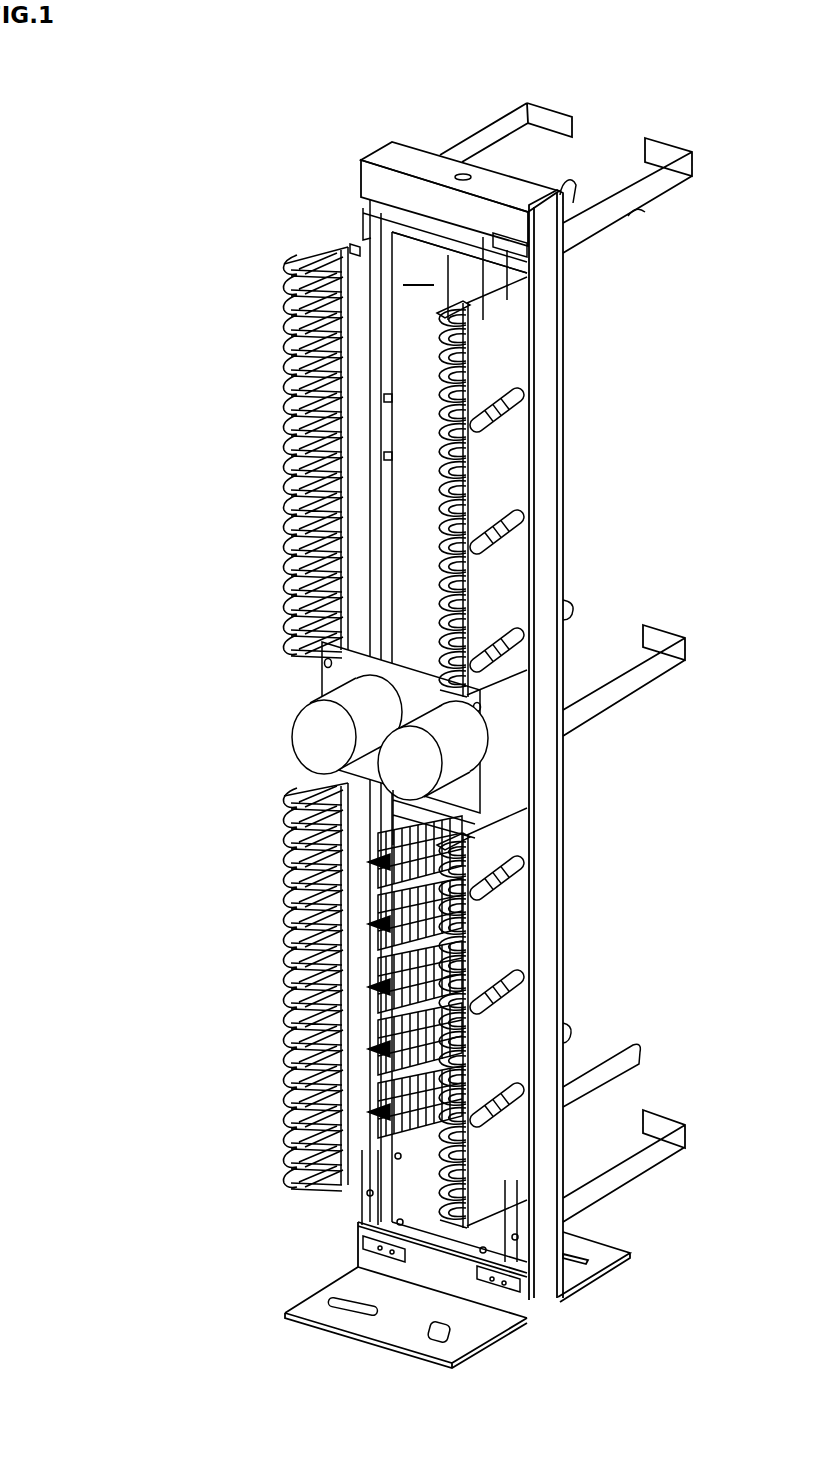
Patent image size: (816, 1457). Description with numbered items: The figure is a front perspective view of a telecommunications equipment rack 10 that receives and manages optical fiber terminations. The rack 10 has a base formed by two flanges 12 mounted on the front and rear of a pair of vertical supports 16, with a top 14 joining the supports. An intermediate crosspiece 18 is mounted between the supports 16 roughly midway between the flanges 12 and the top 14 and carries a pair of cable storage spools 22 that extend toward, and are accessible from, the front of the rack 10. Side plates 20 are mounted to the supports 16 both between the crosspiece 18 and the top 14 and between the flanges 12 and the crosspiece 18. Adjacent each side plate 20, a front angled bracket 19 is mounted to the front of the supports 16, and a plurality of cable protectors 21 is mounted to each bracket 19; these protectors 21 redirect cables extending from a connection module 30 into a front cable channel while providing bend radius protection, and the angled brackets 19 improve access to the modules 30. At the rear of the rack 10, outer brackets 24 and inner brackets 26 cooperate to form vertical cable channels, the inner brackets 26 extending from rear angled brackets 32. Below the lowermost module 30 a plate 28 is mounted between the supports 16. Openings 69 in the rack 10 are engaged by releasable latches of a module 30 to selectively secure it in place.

The telecommunications equipment rack 10 is at (272, 213).
The flanges 12 is at (603, 1255).
The top 14 is at (382, 152).
The vertical supports 16 is at (372, 195).
The intermediate crosspiece 18 is at (328, 687).
The front angled bracket 19 is at (355, 250).
The side plates 20 is at (270, 463).
The cable protectors 21 is at (287, 360).
The cable storage spools 22 is at (288, 300).
The outer brackets 24 is at (493, 138).
The inner brackets 26 is at (570, 182).
The plate 28 is at (395, 1173).
The connection module 30 is at (388, 833).
The rear angled brackets 32 is at (459, 747).
The openings 69 is at (387, 398).